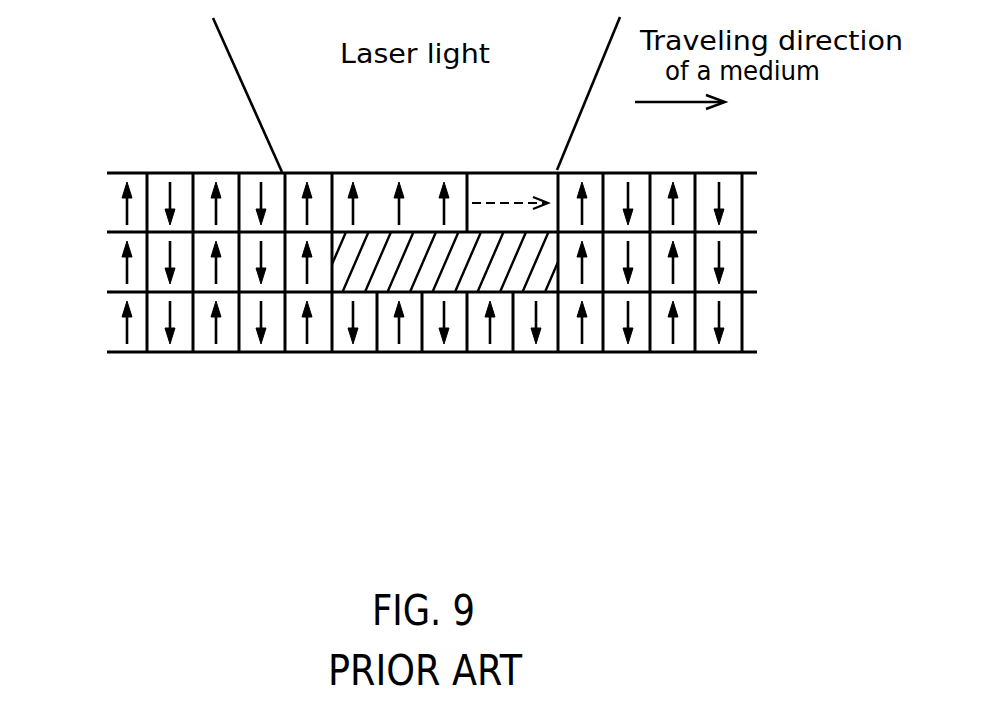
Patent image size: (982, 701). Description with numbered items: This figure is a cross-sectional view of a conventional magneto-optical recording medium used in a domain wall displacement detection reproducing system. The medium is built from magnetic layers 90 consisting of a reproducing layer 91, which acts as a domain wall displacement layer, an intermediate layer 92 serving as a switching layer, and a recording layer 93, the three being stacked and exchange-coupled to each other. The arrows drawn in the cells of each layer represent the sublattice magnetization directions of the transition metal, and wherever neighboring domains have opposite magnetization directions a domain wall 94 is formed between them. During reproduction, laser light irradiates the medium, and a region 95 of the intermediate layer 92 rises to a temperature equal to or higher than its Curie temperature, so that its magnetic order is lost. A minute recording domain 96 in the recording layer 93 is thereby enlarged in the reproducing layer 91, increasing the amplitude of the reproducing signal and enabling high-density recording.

The magnetic layers 90 is at (73, 175).
The reproducing layer 91 is at (397, 203).
The intermediate layer 92 is at (397, 332).
The recording layer 93 is at (397, 322).
The domain wall 94 is at (147, 328).
The region 95 is at (445, 268).
The minute recording domain 96 is at (315, 333).